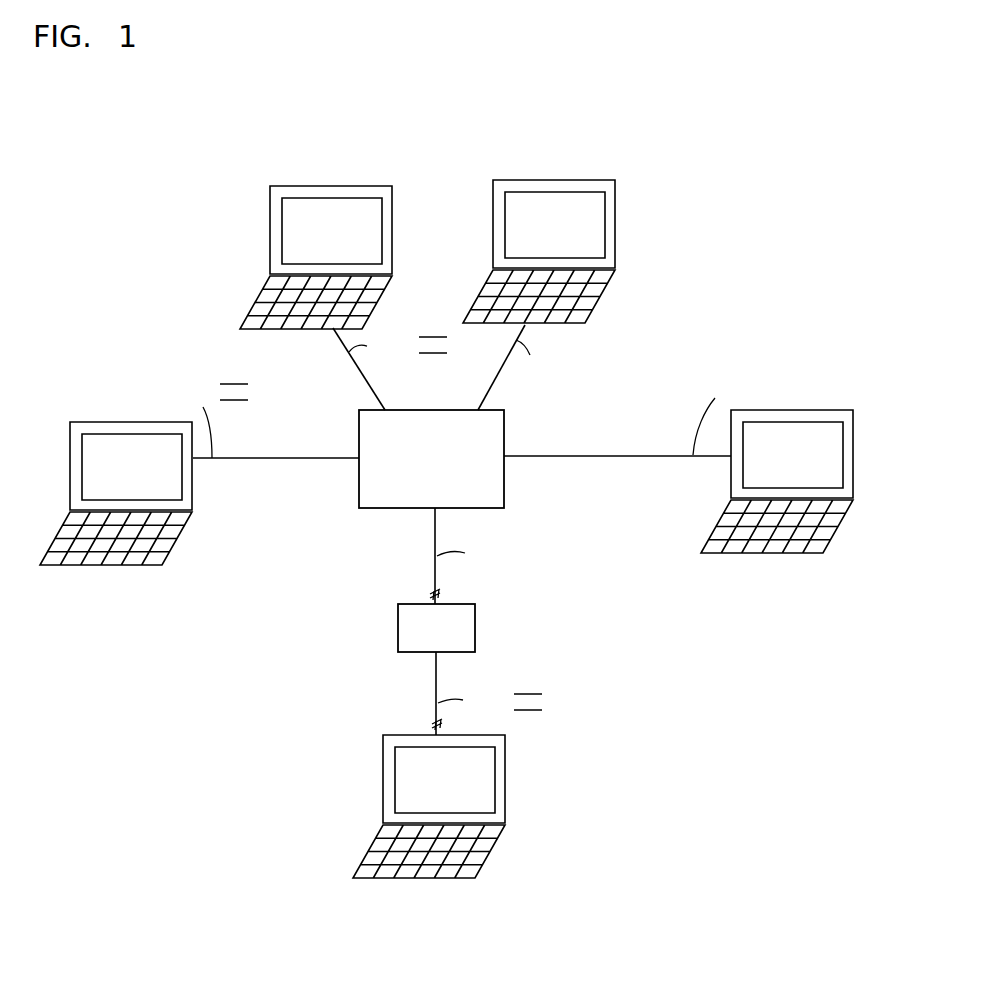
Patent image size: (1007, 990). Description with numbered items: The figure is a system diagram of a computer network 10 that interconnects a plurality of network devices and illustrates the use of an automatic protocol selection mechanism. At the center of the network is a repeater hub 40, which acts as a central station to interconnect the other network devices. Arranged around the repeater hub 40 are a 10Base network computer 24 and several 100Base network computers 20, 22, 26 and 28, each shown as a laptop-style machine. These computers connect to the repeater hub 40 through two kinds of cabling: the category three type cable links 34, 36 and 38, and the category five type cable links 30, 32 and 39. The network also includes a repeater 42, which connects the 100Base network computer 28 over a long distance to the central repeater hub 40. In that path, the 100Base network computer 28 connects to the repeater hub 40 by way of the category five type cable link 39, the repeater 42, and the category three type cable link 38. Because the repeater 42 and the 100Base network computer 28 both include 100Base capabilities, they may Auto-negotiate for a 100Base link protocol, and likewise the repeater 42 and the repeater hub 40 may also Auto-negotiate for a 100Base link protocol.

The computer network 10 is at (656, 256).
The 100Base network computer 20 is at (83, 422).
The 100Base network computer 22 is at (322, 186).
The 10Base network computer 24 is at (555, 180).
The 100Base network computer 26 is at (803, 410).
The 100Base network computer 28 is at (508, 763).
The category 5 type cable link 30 is at (282, 458).
The category 5 type cable link 32 is at (372, 390).
The category 3 type cable link 34 is at (492, 387).
The category 3 type cable link 36 is at (568, 456).
The category 3 type cable link 38 is at (436, 532).
The category 5 type cable link 39 is at (438, 676).
The repeater hub 40 is at (505, 423).
The repeater 42 is at (476, 617).